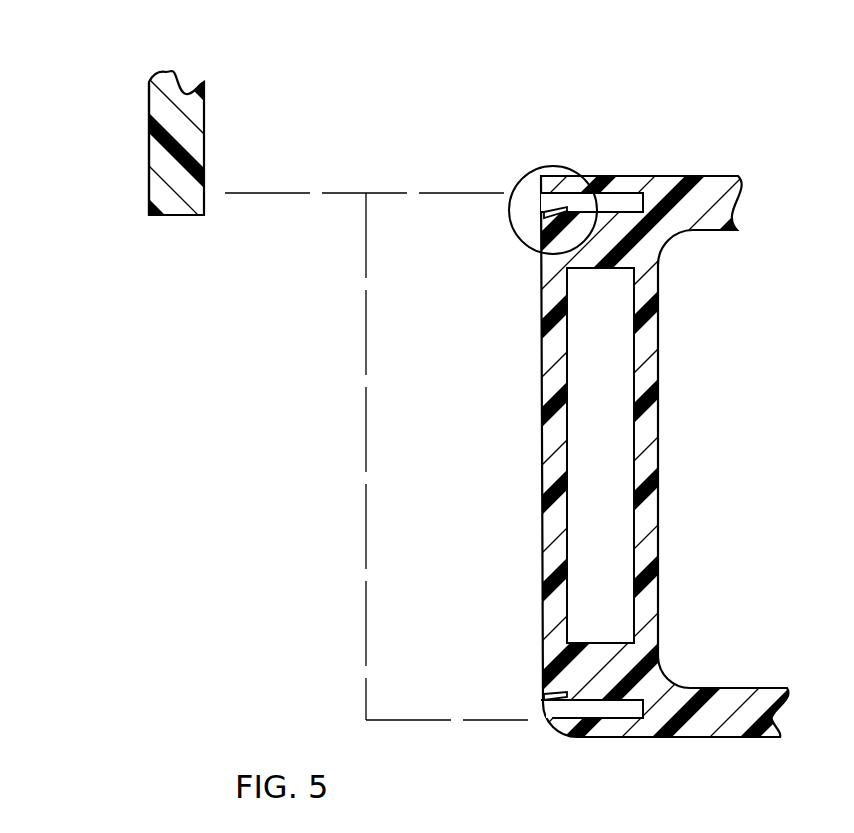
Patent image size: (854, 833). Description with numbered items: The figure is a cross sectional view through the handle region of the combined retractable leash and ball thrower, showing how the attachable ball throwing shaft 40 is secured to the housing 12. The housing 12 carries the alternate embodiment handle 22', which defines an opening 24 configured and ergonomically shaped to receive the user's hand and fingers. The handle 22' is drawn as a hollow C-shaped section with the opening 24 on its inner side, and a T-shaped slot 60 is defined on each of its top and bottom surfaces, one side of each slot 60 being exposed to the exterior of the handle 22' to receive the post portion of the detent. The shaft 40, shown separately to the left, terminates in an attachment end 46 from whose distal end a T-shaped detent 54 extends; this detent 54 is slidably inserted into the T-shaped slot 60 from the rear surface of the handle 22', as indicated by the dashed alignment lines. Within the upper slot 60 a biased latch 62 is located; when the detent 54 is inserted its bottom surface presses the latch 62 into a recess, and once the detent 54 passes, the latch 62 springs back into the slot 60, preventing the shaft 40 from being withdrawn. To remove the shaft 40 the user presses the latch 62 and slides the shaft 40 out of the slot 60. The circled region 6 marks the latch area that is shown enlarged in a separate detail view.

The enlarged detail circle 6 is at (558, 166).
The housing 12 is at (729, 176).
The handle 22' is at (497, 455).
The opening 24 is at (690, 382).
The ball throwing shaft 40 is at (173, 70).
The attachment end 46 is at (147, 145).
The T-shaped detent 54 is at (175, 217).
The T-shaped slot 60 is at (607, 192).
The biased latch 62 is at (552, 207).